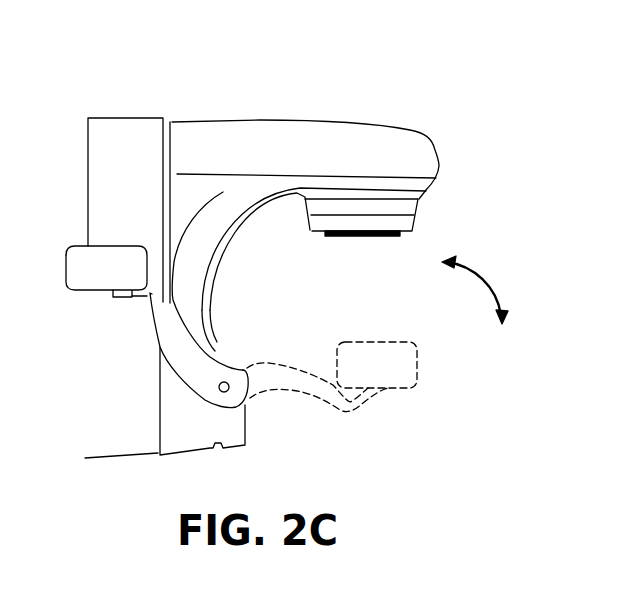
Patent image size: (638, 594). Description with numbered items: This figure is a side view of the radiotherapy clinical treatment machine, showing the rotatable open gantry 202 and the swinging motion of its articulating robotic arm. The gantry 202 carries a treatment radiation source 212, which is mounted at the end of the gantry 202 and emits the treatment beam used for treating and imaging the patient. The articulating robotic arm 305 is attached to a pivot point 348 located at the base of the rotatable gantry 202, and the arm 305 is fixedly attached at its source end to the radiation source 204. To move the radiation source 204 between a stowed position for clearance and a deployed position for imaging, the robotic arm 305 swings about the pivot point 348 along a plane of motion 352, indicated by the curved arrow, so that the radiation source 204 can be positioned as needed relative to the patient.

The rotatable open gantry 202 is at (310, 105).
The radiation source 204 is at (88, 305).
The treatment radiation source 212 is at (427, 220).
The articulating robotic arm 305 is at (155, 355).
The pivot point 348 is at (247, 400).
The plane of motion 352 is at (485, 283).